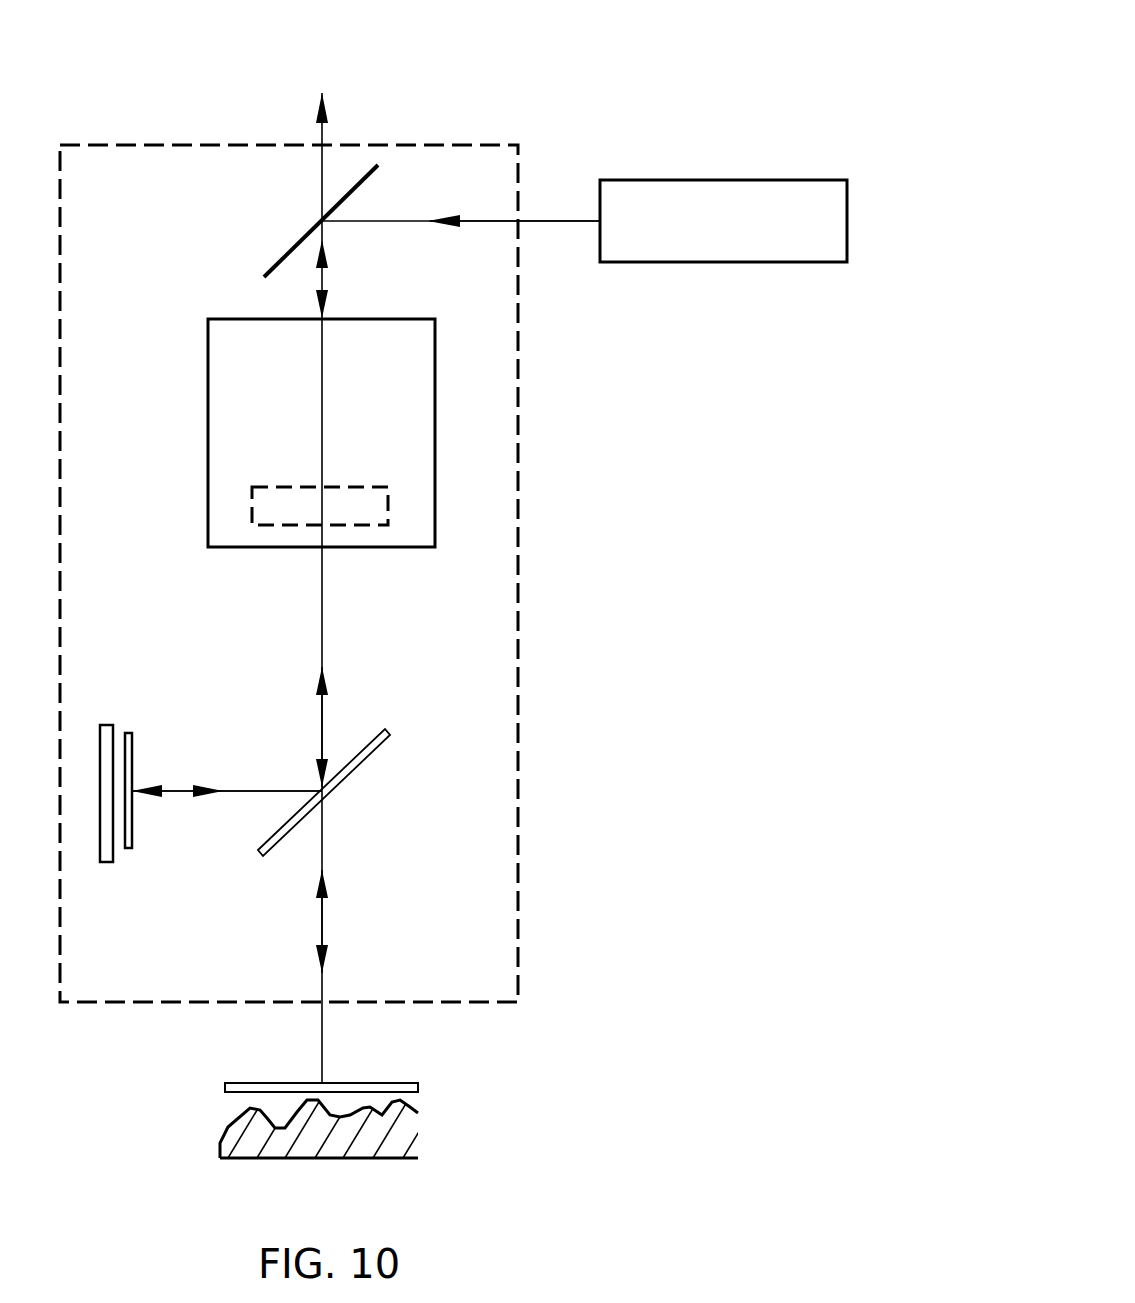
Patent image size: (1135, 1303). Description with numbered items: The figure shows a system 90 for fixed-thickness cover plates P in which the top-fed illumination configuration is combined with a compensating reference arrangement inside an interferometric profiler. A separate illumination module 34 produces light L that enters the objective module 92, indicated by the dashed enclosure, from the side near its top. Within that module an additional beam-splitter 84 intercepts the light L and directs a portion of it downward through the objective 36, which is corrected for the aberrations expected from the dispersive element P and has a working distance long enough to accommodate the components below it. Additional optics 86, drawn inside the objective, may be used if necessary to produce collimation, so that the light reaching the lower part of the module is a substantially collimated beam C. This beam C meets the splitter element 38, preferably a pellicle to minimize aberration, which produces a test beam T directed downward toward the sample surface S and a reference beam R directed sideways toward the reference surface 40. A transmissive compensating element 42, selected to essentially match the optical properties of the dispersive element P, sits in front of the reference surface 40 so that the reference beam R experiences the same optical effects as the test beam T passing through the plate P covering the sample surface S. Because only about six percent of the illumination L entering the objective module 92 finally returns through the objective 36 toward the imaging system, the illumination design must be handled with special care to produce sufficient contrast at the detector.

The system 90 is at (662, 103).
The illumination module 34 is at (838, 228).
The light L is at (583, 221).
The beam-splitter 84 is at (285, 250).
The objective 36 is at (215, 455).
The objective module 92 is at (517, 422).
The additional optics 86 is at (388, 505).
The collimated light beam C is at (323, 712).
The reference beam R is at (268, 788).
The splitter element 38 is at (343, 773).
The test beam T is at (320, 855).
The reference surface 40 is at (105, 863).
The transmissive compensating element 42 is at (127, 850).
The dispersive element P is at (373, 1085).
The sample surface S is at (407, 1100).